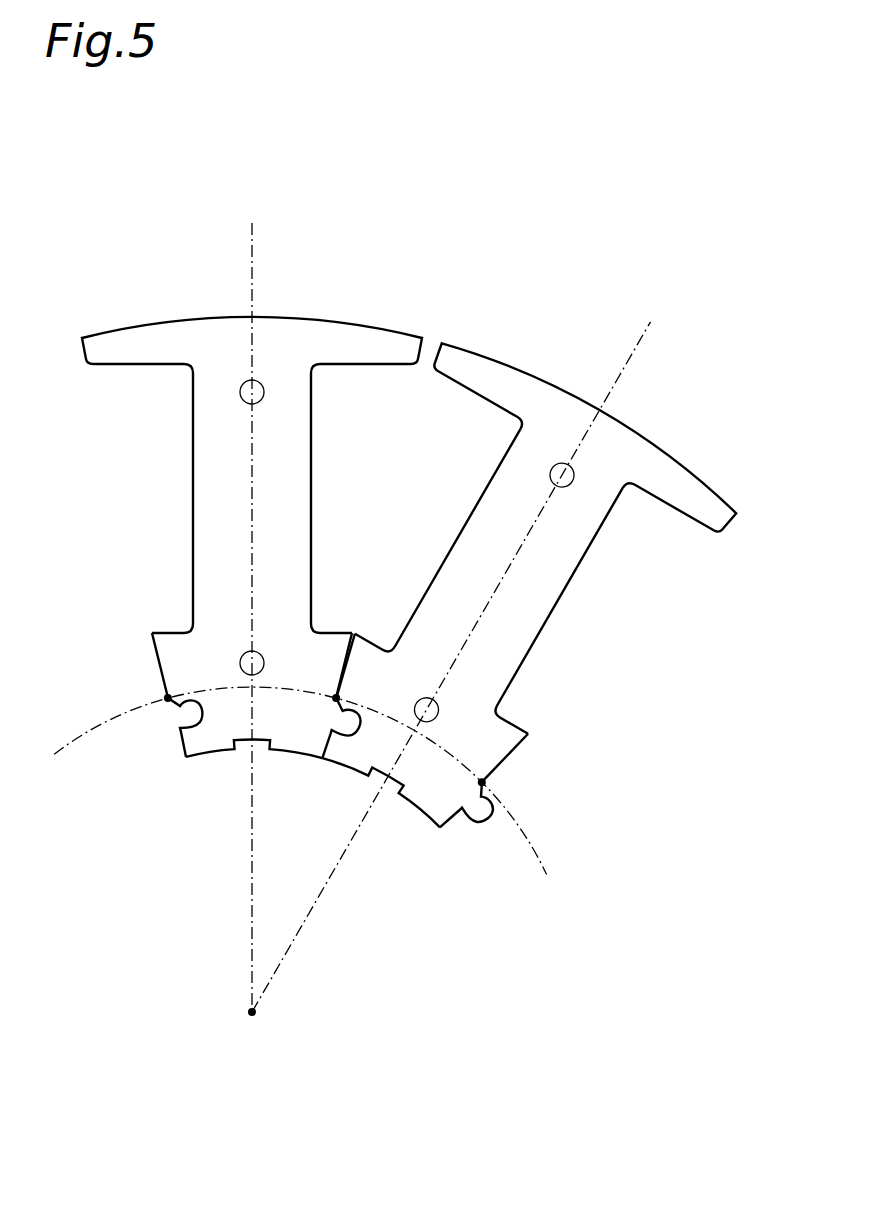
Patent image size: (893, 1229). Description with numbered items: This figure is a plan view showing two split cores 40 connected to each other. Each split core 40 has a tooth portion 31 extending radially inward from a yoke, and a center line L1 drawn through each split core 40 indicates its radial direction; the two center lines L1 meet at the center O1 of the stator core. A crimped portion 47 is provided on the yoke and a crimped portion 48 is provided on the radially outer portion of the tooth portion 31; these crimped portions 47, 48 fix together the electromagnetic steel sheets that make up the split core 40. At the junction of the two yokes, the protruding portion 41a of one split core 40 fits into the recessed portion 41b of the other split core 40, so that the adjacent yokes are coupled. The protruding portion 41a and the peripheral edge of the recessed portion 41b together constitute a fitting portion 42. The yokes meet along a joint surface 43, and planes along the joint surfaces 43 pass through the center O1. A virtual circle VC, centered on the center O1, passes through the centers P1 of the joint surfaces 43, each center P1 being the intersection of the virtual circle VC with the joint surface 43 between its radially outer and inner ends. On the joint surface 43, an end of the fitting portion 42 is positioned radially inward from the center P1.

The split core 40 is at (318, 305).
The tooth portion 31 is at (290, 503).
The joint surface 43 is at (156, 670).
The crimped portion 48 is at (264, 392).
The crimped portion 47 is at (240, 657).
The fitting portion 42 is at (347, 820).
The protruding portion 41a is at (347, 735).
The recessed portion 41b is at (179, 728).
The center of the joint surface P1 is at (165, 695).
The center line L1 is at (250, 260).
The virtual circle VC is at (537, 849).
The center of the stator core O1 is at (254, 1016).